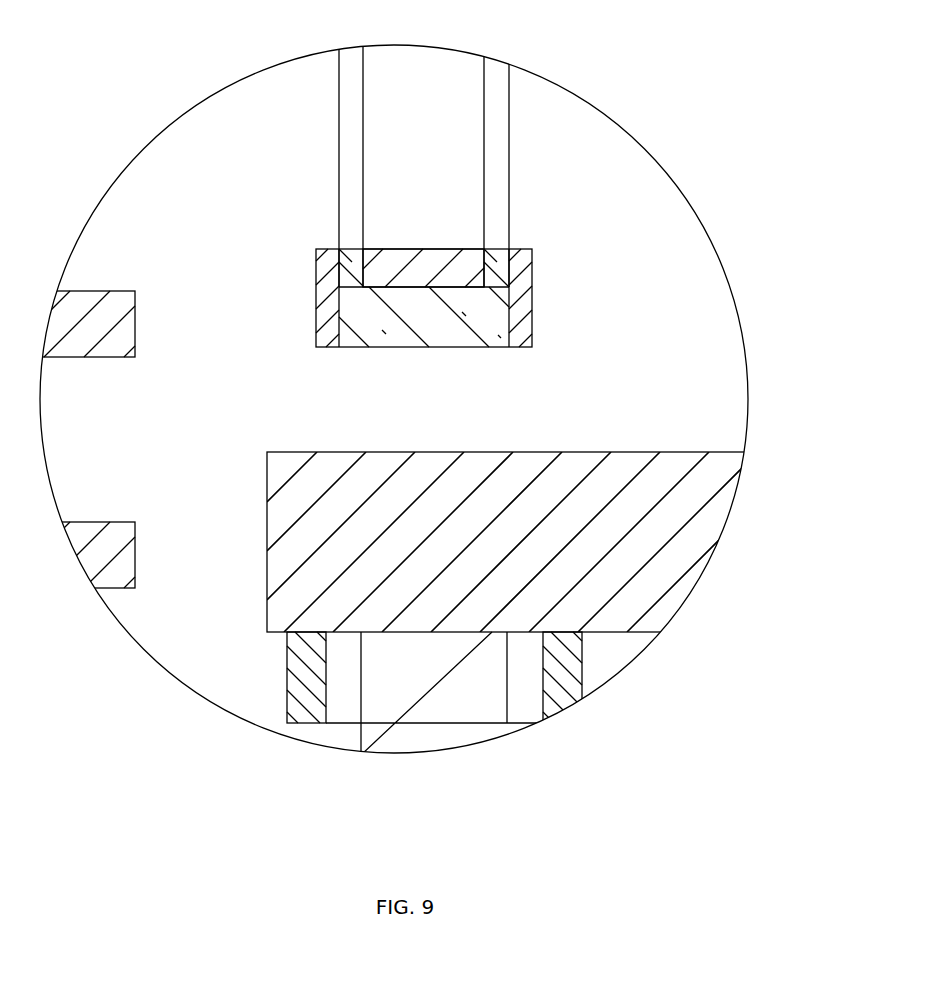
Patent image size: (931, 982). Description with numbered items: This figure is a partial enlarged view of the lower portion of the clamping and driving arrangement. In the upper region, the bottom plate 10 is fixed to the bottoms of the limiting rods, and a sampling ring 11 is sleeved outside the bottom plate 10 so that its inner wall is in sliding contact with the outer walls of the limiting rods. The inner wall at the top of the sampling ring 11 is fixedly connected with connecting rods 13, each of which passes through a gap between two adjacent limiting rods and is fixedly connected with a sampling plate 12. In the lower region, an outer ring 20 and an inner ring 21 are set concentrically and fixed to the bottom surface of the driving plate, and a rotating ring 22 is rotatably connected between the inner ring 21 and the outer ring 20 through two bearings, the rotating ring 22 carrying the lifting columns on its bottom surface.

The bottom plate 10 is at (395, 300).
The sampling ring 11 is at (517, 309).
The sampling plate 12 is at (387, 287).
The connecting rod 13 is at (340, 285).
The outer ring 20 is at (292, 691).
The inner ring 21 is at (557, 675).
The rotating ring 22 is at (437, 687).